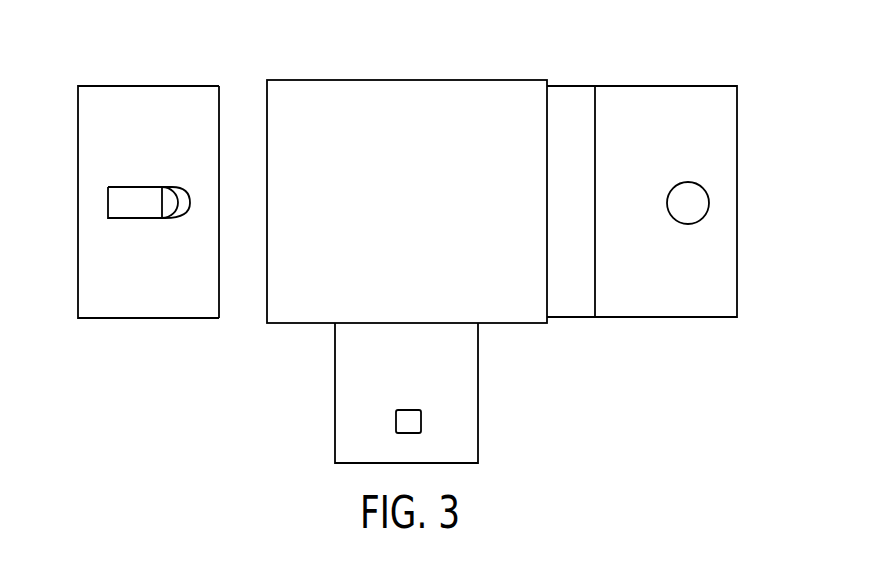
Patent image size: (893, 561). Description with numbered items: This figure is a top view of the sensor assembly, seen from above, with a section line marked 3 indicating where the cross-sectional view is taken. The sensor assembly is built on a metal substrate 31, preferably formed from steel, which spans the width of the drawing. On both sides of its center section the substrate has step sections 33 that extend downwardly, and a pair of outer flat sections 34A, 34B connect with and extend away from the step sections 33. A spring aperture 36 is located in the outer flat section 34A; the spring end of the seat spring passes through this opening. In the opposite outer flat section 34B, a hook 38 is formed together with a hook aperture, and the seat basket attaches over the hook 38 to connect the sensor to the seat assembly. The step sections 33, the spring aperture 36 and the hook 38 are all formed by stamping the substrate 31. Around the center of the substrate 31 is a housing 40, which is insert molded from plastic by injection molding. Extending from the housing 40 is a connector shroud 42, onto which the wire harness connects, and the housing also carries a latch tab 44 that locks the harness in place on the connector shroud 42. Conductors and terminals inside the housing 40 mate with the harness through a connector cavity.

The section line 3- 3 is at (76, 202).
The metal substrate 31 is at (99, 93).
The step sections 33 is at (238, 95).
The outer flat section 34A is at (707, 87).
The outer flat section 34B is at (95, 317).
The spring aperture 36 is at (697, 183).
The hook 38 is at (131, 196).
The housing 40 is at (337, 95).
The connector shroud 42 is at (470, 438).
The latch tab 44 is at (395, 418).